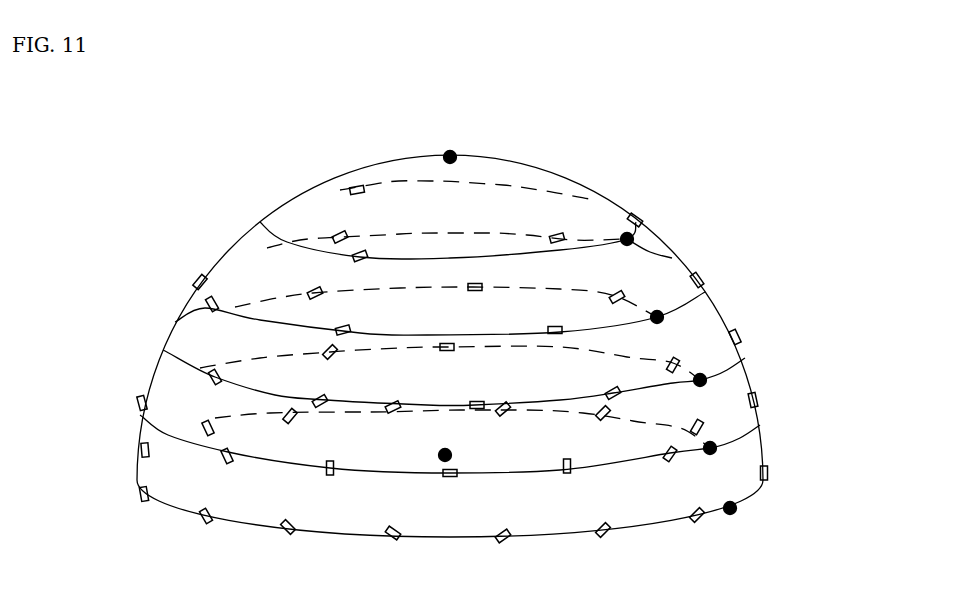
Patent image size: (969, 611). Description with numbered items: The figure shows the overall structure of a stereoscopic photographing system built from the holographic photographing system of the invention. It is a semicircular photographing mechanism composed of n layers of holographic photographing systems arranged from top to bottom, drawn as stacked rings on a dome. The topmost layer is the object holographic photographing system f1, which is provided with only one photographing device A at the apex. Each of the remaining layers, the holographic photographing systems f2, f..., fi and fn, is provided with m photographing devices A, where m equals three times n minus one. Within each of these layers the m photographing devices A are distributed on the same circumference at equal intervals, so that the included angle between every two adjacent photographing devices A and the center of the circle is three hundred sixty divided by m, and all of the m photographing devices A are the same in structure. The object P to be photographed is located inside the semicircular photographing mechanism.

The photographing device A is at (200, 282).
The object P is at (445, 455).
The object holographic photographing system f1 is at (450, 157).
The holographic photographing system f2 is at (627, 239).
The holographic photographing system f... is at (710, 448).
The holographic photographing system fi is at (700, 380).
The holographic photographing system fn is at (730, 508).